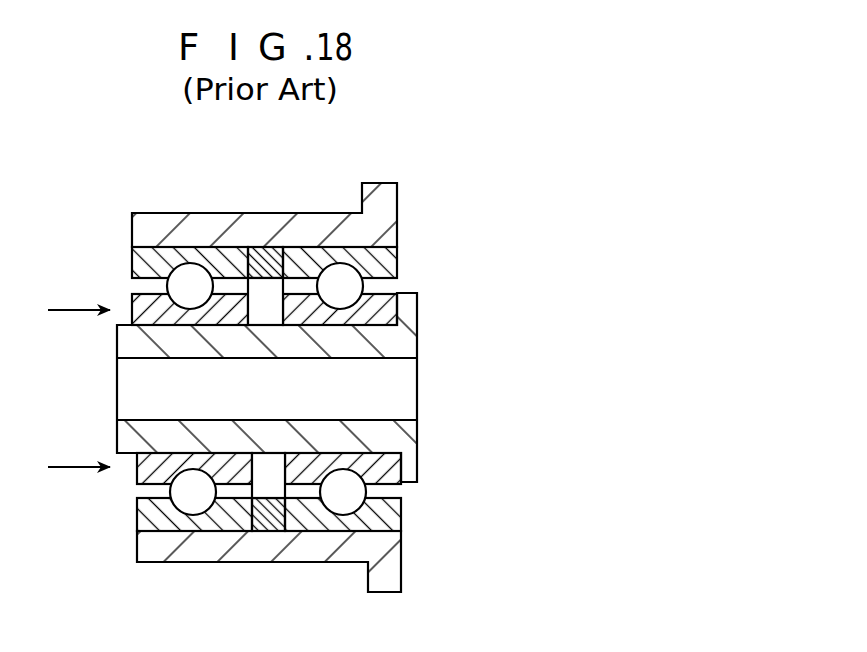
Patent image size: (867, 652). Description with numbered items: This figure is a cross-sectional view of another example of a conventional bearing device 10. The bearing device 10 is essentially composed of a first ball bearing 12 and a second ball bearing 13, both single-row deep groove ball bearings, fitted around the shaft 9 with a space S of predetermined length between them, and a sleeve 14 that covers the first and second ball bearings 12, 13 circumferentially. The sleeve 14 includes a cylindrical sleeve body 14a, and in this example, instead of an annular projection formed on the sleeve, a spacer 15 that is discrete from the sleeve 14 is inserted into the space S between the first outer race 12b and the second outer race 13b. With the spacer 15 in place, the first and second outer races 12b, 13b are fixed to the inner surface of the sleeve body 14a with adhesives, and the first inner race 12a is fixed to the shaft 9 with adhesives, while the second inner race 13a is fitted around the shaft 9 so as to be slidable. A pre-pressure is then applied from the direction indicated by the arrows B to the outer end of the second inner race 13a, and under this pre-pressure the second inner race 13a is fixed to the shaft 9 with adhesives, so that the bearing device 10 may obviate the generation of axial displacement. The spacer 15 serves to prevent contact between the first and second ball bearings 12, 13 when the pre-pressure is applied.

The bearing device 10 is at (432, 178).
The shaft 9 is at (423, 347).
The sleeve 14 is at (377, 224).
The sleeve body 14a is at (158, 233).
The spacer 15 is at (265, 535).
The second ball bearing 13 is at (213, 235).
The second inner race 13a is at (135, 480).
The second outer race 13b is at (150, 518).
The first ball bearing 12 is at (325, 235).
The first inner race 12a is at (388, 468).
The first outer race 12b is at (383, 517).
The space S is at (263, 256).
The arrows B is at (65, 391).